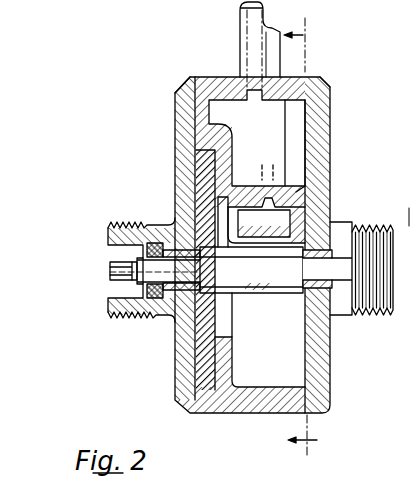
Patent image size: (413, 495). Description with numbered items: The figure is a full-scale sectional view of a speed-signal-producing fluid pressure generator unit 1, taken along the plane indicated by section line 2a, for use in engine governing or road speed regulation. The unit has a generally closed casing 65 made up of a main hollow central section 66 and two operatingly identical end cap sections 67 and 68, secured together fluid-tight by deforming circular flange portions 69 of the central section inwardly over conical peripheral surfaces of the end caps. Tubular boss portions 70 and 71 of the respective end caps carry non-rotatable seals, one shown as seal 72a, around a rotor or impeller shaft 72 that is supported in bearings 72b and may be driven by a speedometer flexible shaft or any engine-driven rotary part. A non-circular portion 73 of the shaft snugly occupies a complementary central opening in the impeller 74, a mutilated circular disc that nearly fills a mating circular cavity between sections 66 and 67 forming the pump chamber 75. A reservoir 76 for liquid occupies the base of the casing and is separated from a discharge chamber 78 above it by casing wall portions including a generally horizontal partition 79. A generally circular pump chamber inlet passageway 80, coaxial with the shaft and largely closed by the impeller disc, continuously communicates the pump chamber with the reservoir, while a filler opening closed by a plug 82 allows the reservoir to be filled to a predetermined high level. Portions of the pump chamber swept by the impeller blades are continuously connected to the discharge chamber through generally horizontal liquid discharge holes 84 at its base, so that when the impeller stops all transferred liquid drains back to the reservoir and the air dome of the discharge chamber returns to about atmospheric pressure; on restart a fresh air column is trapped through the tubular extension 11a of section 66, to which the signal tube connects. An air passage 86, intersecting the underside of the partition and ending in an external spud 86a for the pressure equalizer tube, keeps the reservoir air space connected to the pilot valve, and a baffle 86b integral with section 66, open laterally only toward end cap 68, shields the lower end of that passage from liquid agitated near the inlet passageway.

The speed-signal-producing fluid pressure generator unit 1 is at (140, 172).
The section line 2a is at (296, 237).
The tubular extension 11a is at (240, 20).
The casing or housing 65 is at (336, 107).
The main hollow central section 66 is at (237, 413).
The end closure or cap section 67 is at (175, 138).
The end closure or cap section 68 is at (331, 130).
The circular flange portions 69 is at (185, 80).
The tubular boss portion 70 is at (147, 225).
The tubular boss portion 71 is at (352, 223).
The rotor or impeller shaft 72 is at (143, 252).
The non-rotatable seal 72a is at (132, 314).
The bearings 72b is at (180, 275).
The non-circular portion of the shaft 73 is at (283, 294).
The impeller or rotor 74 is at (197, 350).
The pump chamber 75 is at (197, 370).
The reservoir 76 is at (277, 363).
The discharge chamber 78 is at (267, 137).
The generally horizontal partition 79 is at (296, 192).
The pump chamber inlet passageway 80 is at (222, 310).
The plug 82 is at (401, 204).
The liquid discharge holes 84 is at (222, 168).
The air passage 86 is at (292, 160).
The external spud or extension 86a is at (276, 52).
The baffle 86b is at (280, 229).